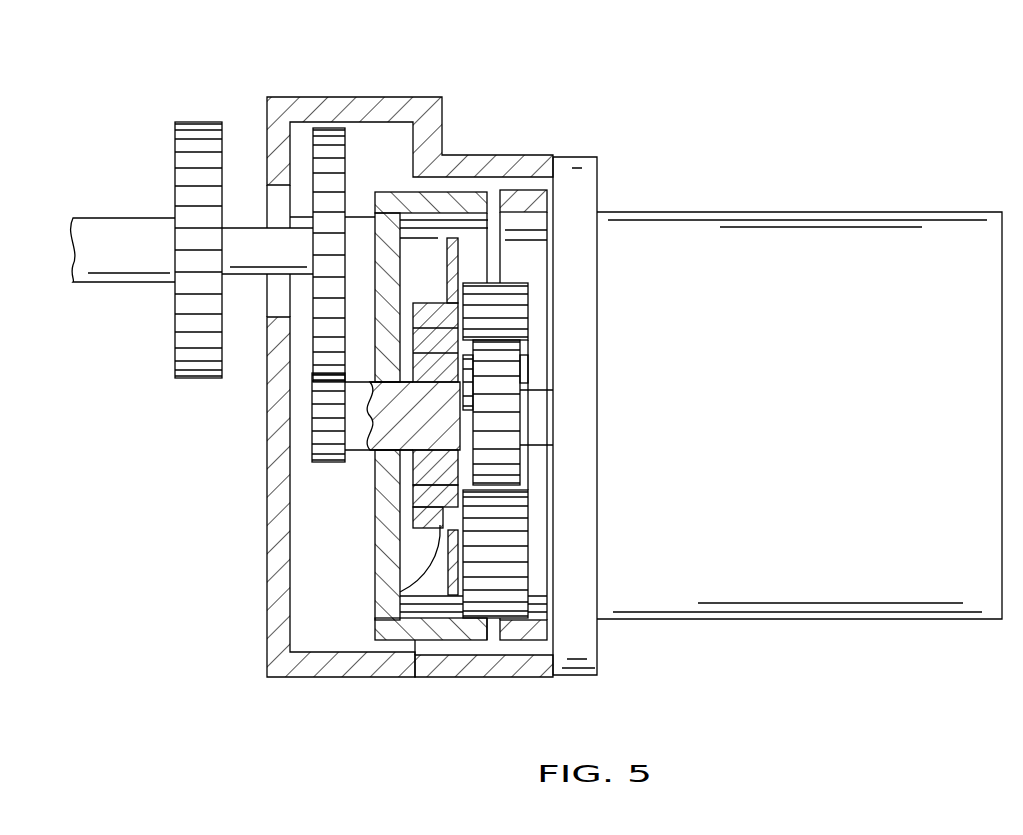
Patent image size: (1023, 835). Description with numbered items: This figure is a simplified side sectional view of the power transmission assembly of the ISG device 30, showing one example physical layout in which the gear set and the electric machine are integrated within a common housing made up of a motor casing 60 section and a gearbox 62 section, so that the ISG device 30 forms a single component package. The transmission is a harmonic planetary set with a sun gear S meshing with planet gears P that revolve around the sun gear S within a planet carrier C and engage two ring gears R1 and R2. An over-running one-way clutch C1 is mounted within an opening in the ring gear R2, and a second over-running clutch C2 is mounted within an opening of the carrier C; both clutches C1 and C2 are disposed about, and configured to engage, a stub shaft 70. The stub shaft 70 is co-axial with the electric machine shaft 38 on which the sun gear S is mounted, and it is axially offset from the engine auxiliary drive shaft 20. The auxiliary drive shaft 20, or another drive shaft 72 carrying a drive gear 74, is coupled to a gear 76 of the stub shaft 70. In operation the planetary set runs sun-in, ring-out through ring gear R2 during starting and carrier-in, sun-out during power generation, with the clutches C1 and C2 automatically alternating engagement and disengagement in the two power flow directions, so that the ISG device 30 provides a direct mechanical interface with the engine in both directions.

The engine auxiliary drive shaft 20 is at (140, 272).
The ISG device 30 is at (536, 362).
The electric machine shaft 38 is at (545, 417).
The motor casing 60 is at (888, 212).
The gearbox 62 is at (436, 112).
The stub shaft 70 is at (387, 453).
The drive shaft 72 is at (243, 242).
The drive gear 74 is at (342, 148).
The gear 76 is at (322, 422).
The planet carrier C is at (398, 597).
The over-running clutch C1 is at (432, 497).
The over-running clutch C2 is at (445, 515).
The planet gear P is at (523, 307).
The ring gear R1 is at (523, 165).
The ring gear R2 is at (393, 192).
The sun gear S is at (512, 366).